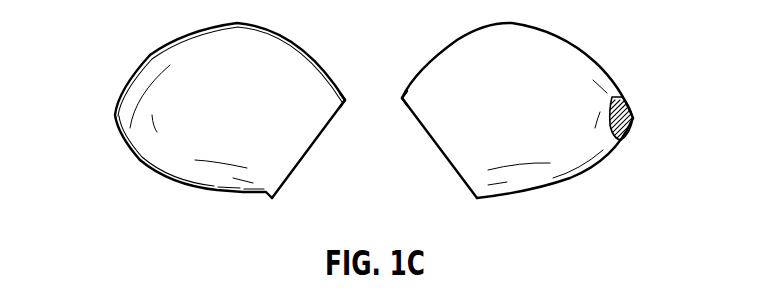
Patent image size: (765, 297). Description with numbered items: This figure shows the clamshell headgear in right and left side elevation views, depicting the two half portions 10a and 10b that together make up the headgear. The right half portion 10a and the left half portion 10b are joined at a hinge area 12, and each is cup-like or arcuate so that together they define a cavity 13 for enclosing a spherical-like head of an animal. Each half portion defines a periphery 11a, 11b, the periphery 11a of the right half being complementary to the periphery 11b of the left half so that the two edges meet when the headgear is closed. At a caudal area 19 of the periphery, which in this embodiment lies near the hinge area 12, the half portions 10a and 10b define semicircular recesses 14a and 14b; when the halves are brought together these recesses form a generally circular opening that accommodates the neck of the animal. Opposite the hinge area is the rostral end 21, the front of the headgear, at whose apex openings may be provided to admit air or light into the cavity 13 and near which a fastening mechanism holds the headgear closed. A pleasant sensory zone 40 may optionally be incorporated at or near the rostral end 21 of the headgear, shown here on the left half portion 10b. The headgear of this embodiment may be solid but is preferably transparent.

The right half portion 10a is at (146, 33).
The left half portion 10b is at (578, 41).
The hinge area 12 is at (285, 42).
The cavity 13 is at (533, 125).
The caudal area 19 is at (403, 93).
The rostral end 21 is at (118, 107).
The periphery of right half portion 11a is at (170, 182).
The periphery of left half portion 11b is at (598, 167).
The semicircular recess of right half portion 14a is at (285, 182).
The semicircular recess of left half portion 14b is at (460, 182).
The pleasant sensory zone 40 is at (637, 118).